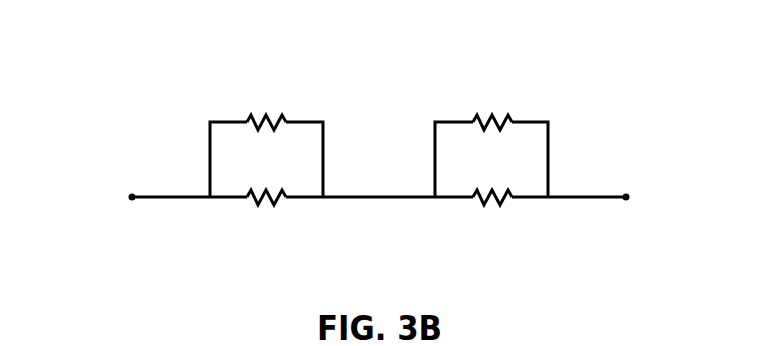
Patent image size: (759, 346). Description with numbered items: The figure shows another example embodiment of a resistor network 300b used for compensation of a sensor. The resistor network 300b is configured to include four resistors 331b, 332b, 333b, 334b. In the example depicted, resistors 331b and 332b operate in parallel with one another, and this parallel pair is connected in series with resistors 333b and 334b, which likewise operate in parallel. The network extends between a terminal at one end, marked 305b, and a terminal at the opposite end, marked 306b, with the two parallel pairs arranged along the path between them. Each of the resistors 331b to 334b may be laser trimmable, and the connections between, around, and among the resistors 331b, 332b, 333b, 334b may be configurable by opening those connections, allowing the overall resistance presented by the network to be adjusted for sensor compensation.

The resistor network 300b is at (372, 38).
The first terminal node 305b is at (132, 197).
The second terminal node 306b is at (626, 197).
The resistor 331b is at (257, 203).
The resistor 332b is at (277, 113).
The resistor 333b is at (482, 203).
The resistor 334b is at (502, 113).